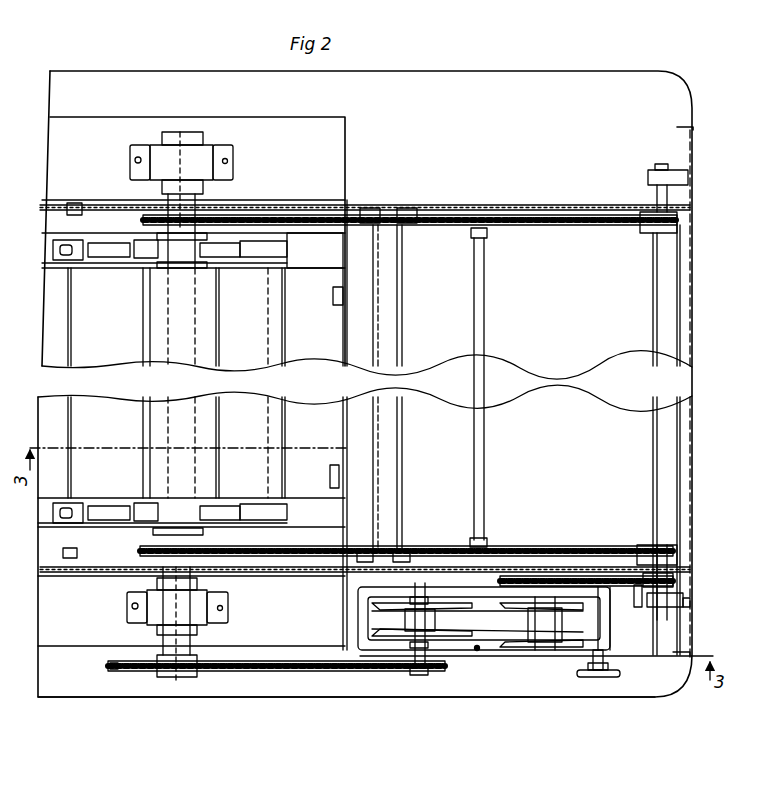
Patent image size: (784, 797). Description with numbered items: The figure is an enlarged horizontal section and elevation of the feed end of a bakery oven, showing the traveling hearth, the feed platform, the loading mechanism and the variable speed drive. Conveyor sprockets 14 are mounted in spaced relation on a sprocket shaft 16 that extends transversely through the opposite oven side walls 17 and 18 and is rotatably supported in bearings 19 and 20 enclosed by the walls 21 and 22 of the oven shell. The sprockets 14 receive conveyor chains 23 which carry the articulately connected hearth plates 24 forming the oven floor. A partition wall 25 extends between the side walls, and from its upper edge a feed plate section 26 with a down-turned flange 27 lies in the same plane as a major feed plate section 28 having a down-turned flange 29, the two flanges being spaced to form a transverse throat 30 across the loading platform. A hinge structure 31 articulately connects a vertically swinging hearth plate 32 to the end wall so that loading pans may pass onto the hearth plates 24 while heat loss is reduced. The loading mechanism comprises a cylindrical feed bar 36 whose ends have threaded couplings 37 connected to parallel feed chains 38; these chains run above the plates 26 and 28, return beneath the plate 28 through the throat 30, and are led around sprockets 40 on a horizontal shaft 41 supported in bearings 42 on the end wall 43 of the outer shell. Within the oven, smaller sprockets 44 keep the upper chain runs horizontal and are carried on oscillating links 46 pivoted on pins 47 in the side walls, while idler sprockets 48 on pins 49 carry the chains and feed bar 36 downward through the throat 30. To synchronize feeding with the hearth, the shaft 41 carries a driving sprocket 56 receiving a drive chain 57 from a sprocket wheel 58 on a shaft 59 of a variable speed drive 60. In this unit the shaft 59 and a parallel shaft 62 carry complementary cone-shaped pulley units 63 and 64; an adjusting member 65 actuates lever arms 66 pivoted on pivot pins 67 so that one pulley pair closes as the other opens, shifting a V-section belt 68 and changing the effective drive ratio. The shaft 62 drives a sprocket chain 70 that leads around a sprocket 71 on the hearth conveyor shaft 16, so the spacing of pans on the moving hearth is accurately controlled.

The conveyor sprockets 14 is at (252, 250).
The sprocket shaft 16 is at (187, 128).
The oven side wall 17 is at (253, 570).
The oven side wall 18 is at (290, 200).
The bearing 19 is at (130, 150).
The bearing 20 is at (137, 597).
The oven shell wall 21 is at (168, 71).
The oven shell wall 22 is at (143, 697).
The conveyor chains 23 is at (290, 242).
The hearth plates 24 is at (93, 318).
The partition wall 25 is at (345, 520).
The feed plate section 26 is at (346, 348).
The down-turned flange 27 is at (346, 420).
The major feed plate section 28 is at (533, 312).
The down-turned flange 29 is at (403, 346).
The transverse throat 30 is at (403, 480).
The hinge structure 31 is at (330, 470).
The hearth plate 32 is at (252, 438).
The feed bar 36 is at (485, 270).
The threaded couplings 37 is at (473, 233).
The feed chains 38 is at (450, 206).
The sprockets 40 is at (670, 560).
The horizontal shaft 41 is at (655, 193).
The bearings 42 is at (677, 175).
The end wall 43 is at (687, 607).
The sprockets 44 is at (143, 216).
The oscillating links 46 is at (100, 570).
The pins 47 is at (73, 203).
The idler sprockets 48 is at (362, 208).
The pins 49 is at (372, 213).
The driving sprocket 56 is at (660, 582).
The drive chain 57 is at (640, 583).
The sprocket wheel 58 is at (550, 572).
The shaft 59 is at (573, 648).
The variable speed drive 60 is at (352, 615).
The shaft 62 is at (420, 675).
The cone-shaped pulley unit 63 is at (600, 672).
The cone-shaped pulley unit 64 is at (383, 638).
The adjusting member 65 is at (612, 640).
The lever arms 66 is at (460, 597).
The pivot pins 67 is at (477, 650).
The belt 68 is at (518, 640).
The sprocket chain 70 is at (295, 672).
The sprocket 71 is at (125, 672).